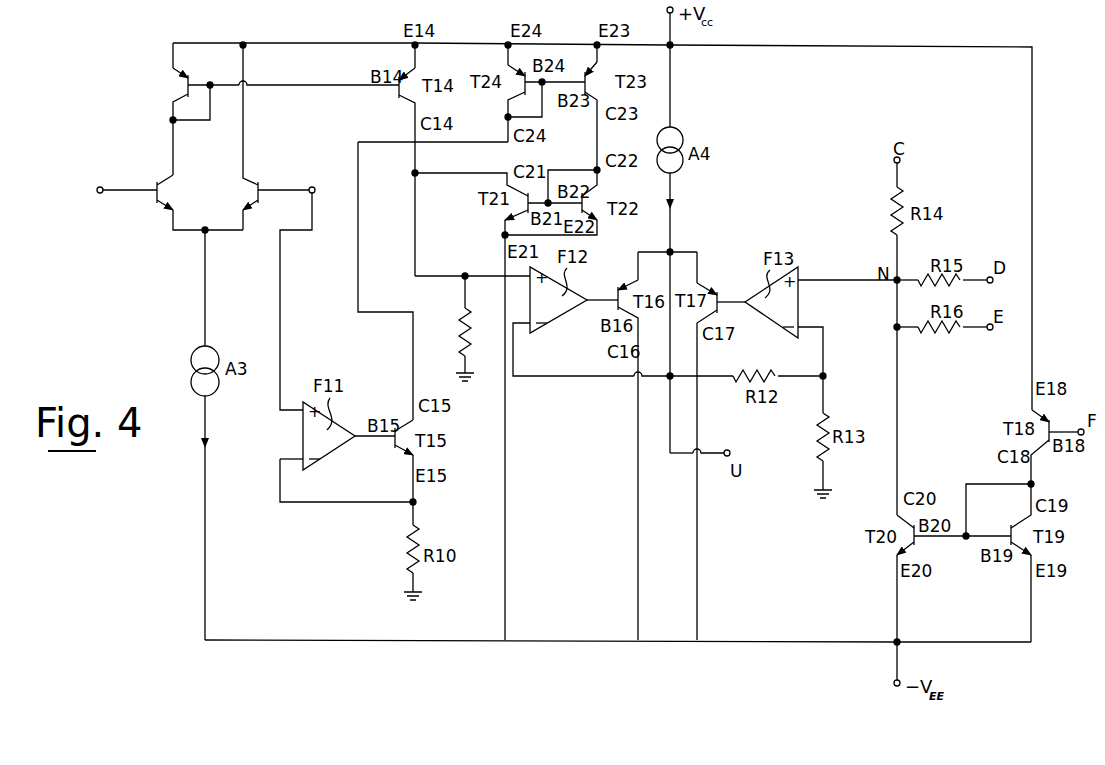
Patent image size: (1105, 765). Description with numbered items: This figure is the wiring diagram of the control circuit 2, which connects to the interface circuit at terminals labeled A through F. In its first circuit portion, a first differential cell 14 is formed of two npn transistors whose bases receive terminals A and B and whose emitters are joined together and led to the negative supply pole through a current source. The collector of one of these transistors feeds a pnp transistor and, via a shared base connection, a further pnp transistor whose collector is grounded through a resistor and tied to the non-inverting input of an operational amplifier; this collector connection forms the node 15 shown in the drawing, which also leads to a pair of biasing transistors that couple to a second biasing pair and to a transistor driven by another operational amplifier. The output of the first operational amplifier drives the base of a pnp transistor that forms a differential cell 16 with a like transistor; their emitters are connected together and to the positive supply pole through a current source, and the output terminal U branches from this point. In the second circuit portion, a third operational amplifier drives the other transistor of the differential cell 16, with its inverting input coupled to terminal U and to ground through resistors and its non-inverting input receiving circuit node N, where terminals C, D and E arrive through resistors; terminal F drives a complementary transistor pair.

The control circuit 2 is at (131, 143).
The first differential cell 14 is at (214, 176).
The node connected to resistor R11 15 is at (432, 276).
The differential cell 16 is at (678, 247).